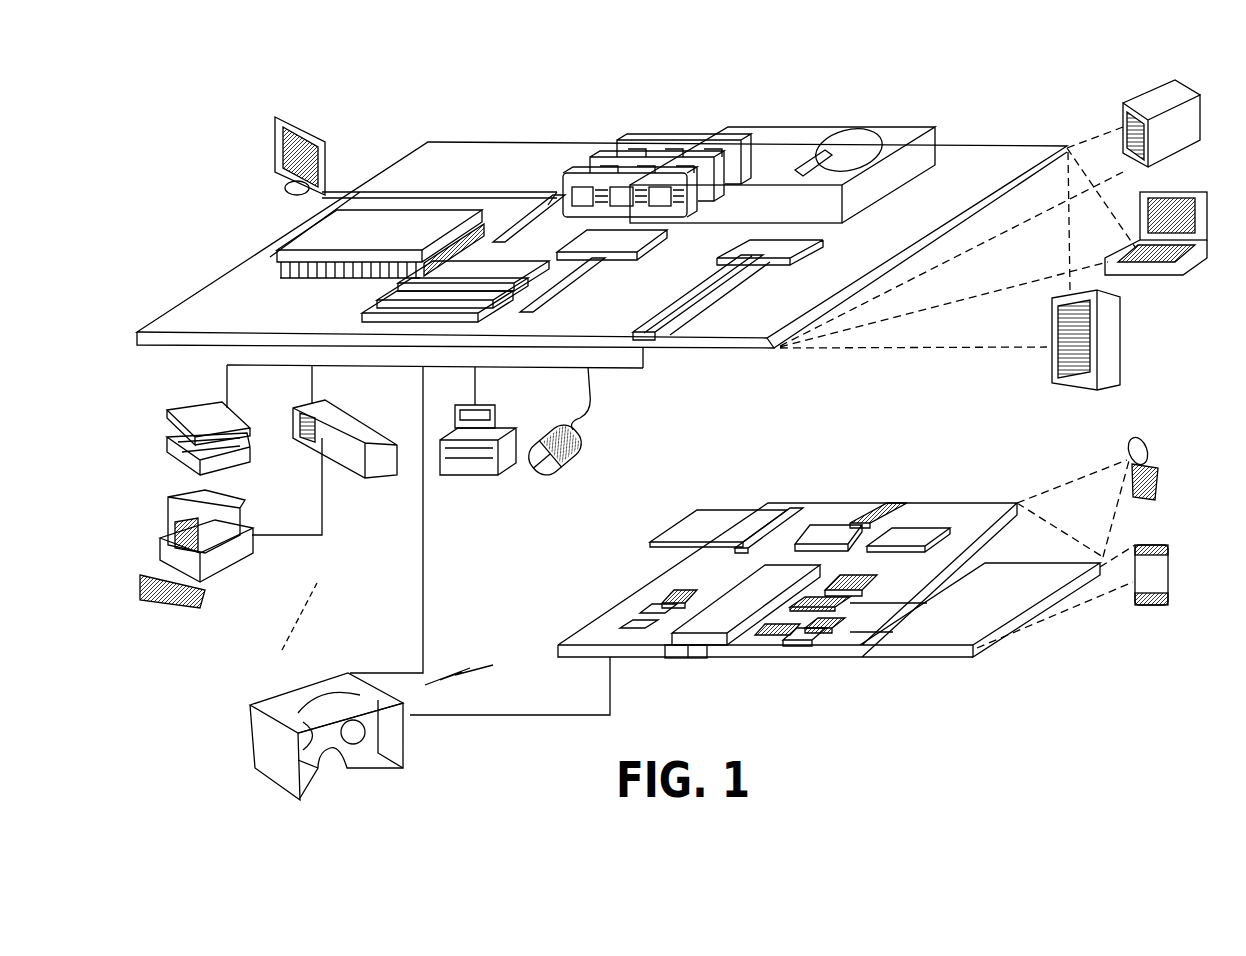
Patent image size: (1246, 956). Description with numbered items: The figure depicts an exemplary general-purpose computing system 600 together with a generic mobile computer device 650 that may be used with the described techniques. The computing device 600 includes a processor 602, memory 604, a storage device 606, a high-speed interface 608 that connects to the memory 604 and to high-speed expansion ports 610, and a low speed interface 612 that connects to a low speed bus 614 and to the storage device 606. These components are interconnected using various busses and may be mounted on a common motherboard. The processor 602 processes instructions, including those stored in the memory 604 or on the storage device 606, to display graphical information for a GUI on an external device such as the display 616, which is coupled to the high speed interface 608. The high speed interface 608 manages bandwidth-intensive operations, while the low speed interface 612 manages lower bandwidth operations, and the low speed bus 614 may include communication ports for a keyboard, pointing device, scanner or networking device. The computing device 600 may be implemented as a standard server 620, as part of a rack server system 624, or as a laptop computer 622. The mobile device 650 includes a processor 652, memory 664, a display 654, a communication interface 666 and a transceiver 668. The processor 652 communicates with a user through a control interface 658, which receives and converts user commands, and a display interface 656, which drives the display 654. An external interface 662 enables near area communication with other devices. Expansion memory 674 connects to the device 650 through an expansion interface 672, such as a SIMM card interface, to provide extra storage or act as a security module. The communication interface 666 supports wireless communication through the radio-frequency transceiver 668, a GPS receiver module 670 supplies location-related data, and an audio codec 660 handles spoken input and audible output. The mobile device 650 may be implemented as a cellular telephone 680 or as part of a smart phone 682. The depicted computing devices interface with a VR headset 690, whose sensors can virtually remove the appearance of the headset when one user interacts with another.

The computing system 600 is at (383, 92).
The processor 602 is at (300, 232).
The memory 604 is at (682, 140).
The storage device 606 is at (880, 126).
The high-speed interface 608 is at (624, 260).
The high-speed expansion ports 610 is at (385, 300).
The low speed interface 612 is at (749, 246).
The low speed bus 614 is at (648, 328).
The display 616 is at (280, 114).
The standard server 620 is at (1140, 100).
The laptop computer 622 is at (1185, 192).
The rack server system 624 is at (1120, 340).
The mobile computer device 650 is at (1046, 658).
The processor 652 is at (721, 597).
The display 654 is at (1013, 575).
The display interface 656 is at (814, 640).
The control interface 658 is at (843, 620).
The audio codec 660 is at (860, 577).
The external interface 662 is at (688, 659).
The memory 664 is at (648, 605).
The communication interface 666 is at (828, 523).
The transceiver 668 is at (920, 528).
The GPS receiver module 670 is at (879, 505).
The expansion interface 672 is at (770, 505).
The expansion memory 674 is at (697, 508).
The cellular telephone 680 is at (1137, 440).
The smart phone 682 is at (1148, 546).
The VR headset 690 is at (410, 727).